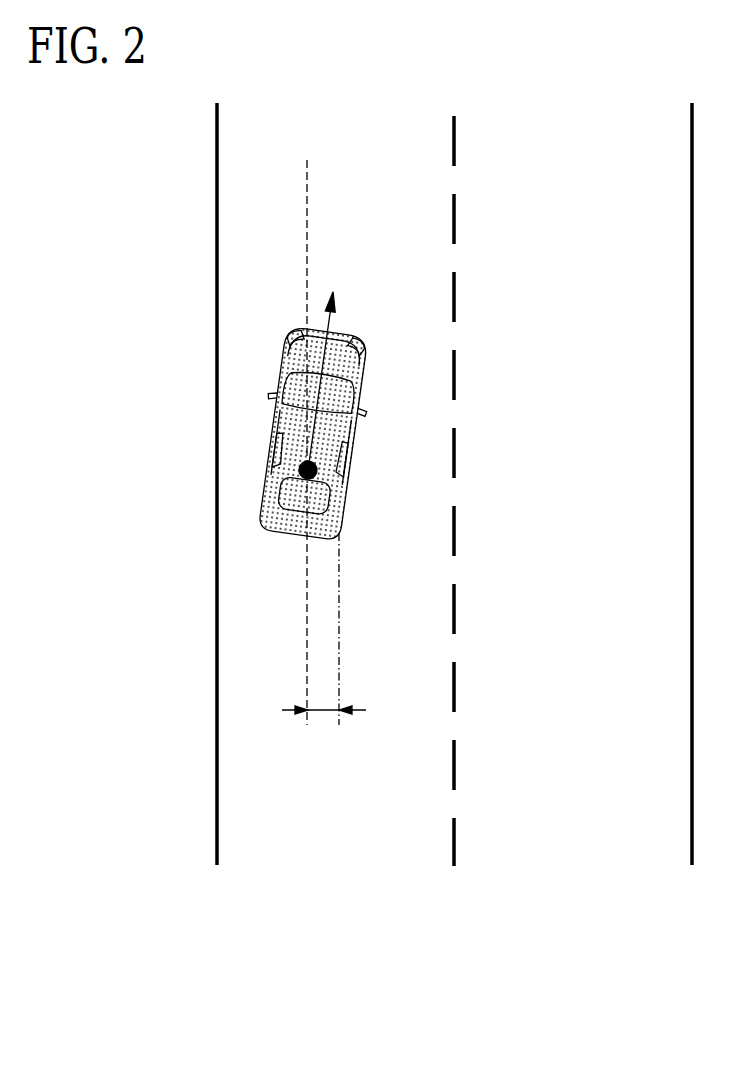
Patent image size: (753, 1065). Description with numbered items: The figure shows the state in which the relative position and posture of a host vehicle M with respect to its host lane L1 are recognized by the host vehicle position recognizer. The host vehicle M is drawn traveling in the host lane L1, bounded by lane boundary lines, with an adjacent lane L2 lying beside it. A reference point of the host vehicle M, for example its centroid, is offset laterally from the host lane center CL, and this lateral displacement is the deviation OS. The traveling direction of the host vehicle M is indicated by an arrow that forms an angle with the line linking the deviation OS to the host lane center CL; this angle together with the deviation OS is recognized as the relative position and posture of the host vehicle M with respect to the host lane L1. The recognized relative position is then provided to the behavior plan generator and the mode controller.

The host vehicle M is at (272, 443).
The host lane center CL is at (339, 608).
The deviation OS is at (324, 733).
The host lane L1 is at (332, 845).
The second lane (adjacent lane) L2 is at (577, 846).